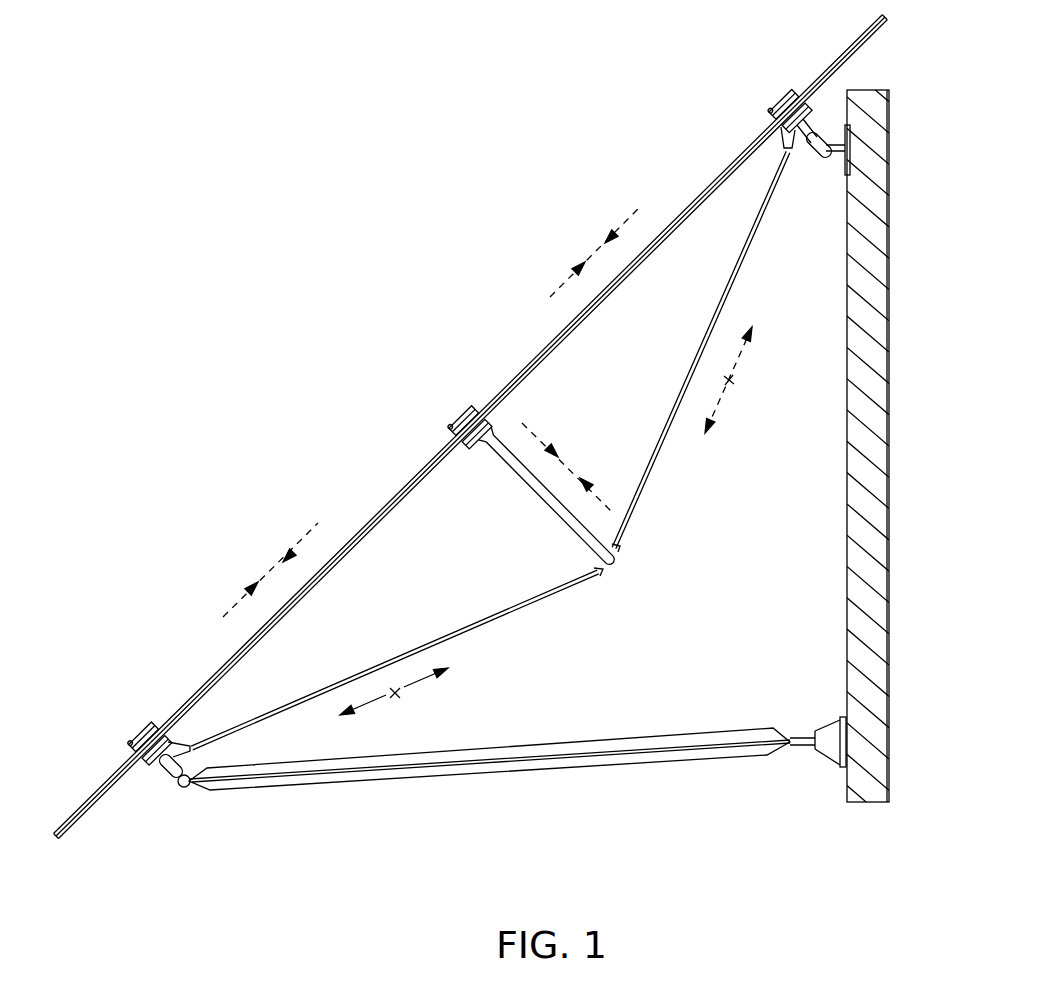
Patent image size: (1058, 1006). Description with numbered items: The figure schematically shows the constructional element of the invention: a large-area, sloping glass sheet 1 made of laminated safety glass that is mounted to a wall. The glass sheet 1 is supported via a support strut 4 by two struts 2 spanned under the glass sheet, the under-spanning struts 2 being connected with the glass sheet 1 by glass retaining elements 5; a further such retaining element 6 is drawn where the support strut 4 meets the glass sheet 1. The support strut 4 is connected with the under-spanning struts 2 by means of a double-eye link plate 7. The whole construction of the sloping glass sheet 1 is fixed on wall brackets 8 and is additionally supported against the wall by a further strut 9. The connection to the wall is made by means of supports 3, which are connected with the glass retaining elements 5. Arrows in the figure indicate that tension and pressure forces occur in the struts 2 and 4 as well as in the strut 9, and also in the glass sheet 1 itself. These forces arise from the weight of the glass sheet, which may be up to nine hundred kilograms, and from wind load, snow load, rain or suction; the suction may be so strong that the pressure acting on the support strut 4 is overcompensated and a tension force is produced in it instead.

The glass sheet 1 is at (522, 350).
The under-spanning struts 2 is at (662, 447).
The supports 3 is at (811, 148).
The support strut 4 is at (525, 482).
The glass retaining elements 5 is at (785, 99).
The rail clamp 6 is at (468, 410).
The double-eye link plate 7 is at (603, 573).
The wall brackets 8 is at (841, 160).
The further strut 9 is at (435, 770).